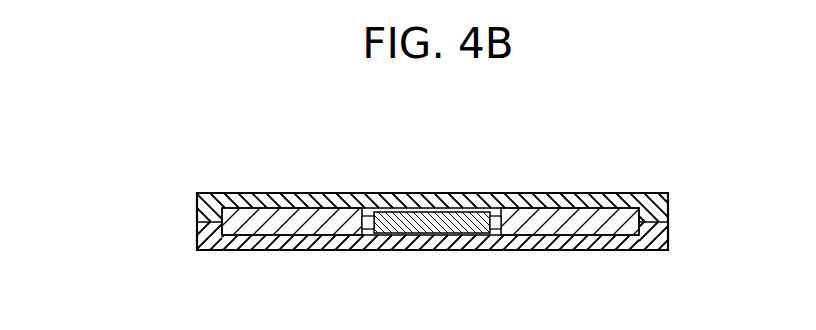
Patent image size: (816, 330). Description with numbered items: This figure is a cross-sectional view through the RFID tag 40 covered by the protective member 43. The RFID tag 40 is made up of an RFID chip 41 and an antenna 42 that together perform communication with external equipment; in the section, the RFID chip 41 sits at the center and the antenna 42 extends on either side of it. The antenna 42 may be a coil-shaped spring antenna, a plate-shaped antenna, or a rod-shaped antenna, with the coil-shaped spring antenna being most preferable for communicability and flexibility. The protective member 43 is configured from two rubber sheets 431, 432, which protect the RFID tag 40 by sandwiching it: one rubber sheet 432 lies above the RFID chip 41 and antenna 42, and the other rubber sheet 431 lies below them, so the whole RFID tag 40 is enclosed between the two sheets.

The RFID tag 40 is at (650, 142).
The RFID chip 41 is at (457, 195).
The antenna 42 is at (337, 195).
The protective member 43 is at (103, 182).
The rubber sheet 431 is at (195, 252).
The rubber sheet 432 is at (195, 207).